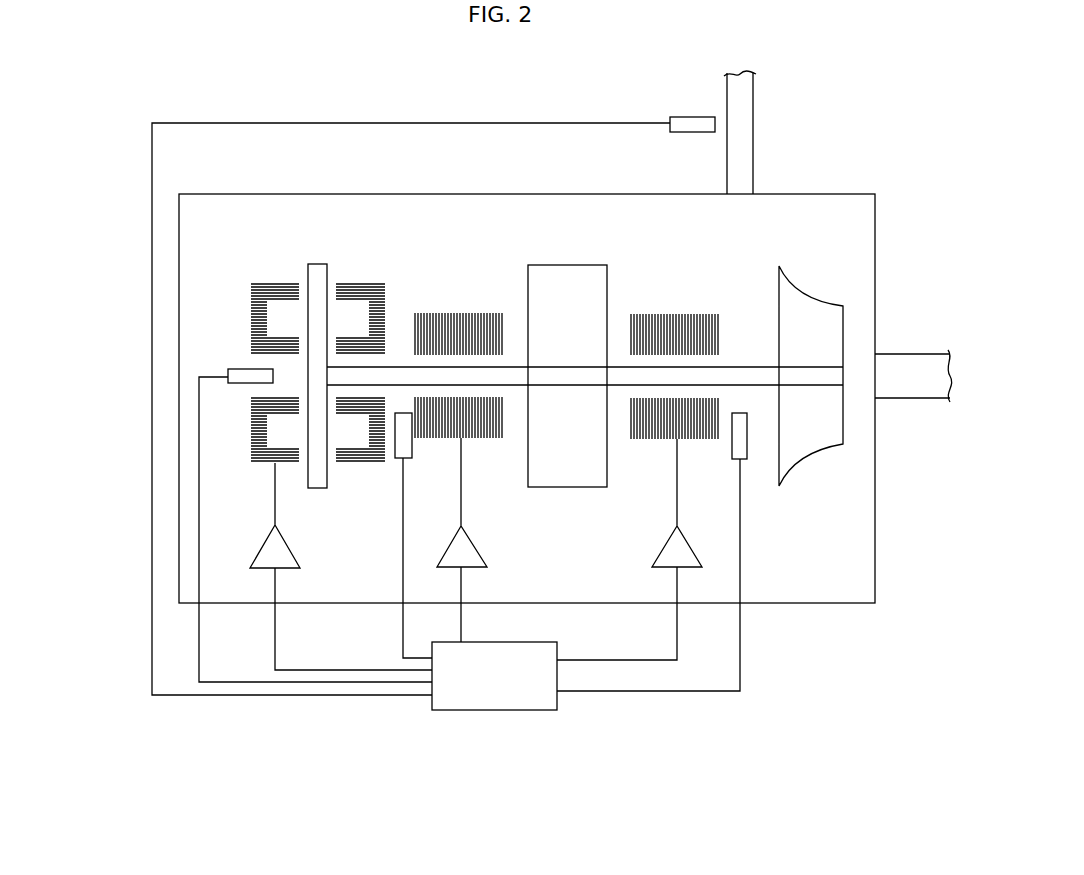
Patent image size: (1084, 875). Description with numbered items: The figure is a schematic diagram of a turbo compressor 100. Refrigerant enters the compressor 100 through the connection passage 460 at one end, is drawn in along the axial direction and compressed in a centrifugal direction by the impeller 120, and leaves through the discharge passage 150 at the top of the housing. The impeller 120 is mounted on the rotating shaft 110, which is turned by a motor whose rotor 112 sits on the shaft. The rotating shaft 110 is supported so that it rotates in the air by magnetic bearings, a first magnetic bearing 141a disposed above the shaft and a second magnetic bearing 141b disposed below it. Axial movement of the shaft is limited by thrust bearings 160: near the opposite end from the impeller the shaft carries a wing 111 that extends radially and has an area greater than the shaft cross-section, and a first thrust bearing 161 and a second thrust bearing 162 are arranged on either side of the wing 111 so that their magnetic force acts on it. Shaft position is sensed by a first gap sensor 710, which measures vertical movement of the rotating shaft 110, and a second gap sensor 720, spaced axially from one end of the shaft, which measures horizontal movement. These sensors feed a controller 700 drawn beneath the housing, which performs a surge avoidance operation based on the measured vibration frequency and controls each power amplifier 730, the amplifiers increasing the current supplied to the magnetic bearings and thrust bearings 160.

The compressor 100 is at (892, 158).
The rotating shaft 110 is at (398, 358).
The wing 111 is at (316, 273).
The rotor 112 is at (558, 300).
The impeller 120 is at (806, 308).
The first magnetic bearing 141a is at (452, 318).
The second magnetic bearing 141b is at (473, 430).
The discharge passage 150 is at (740, 122).
The thrust bearings 160 is at (96, 436).
The first thrust bearing 161 is at (258, 418).
The second thrust bearing 162 is at (358, 444).
The connection passage 460 is at (905, 372).
The controller 700 is at (505, 700).
The first gap sensor 710 is at (405, 450).
The second gap sensor 720 is at (241, 368).
The power amplifier 730 is at (282, 548).